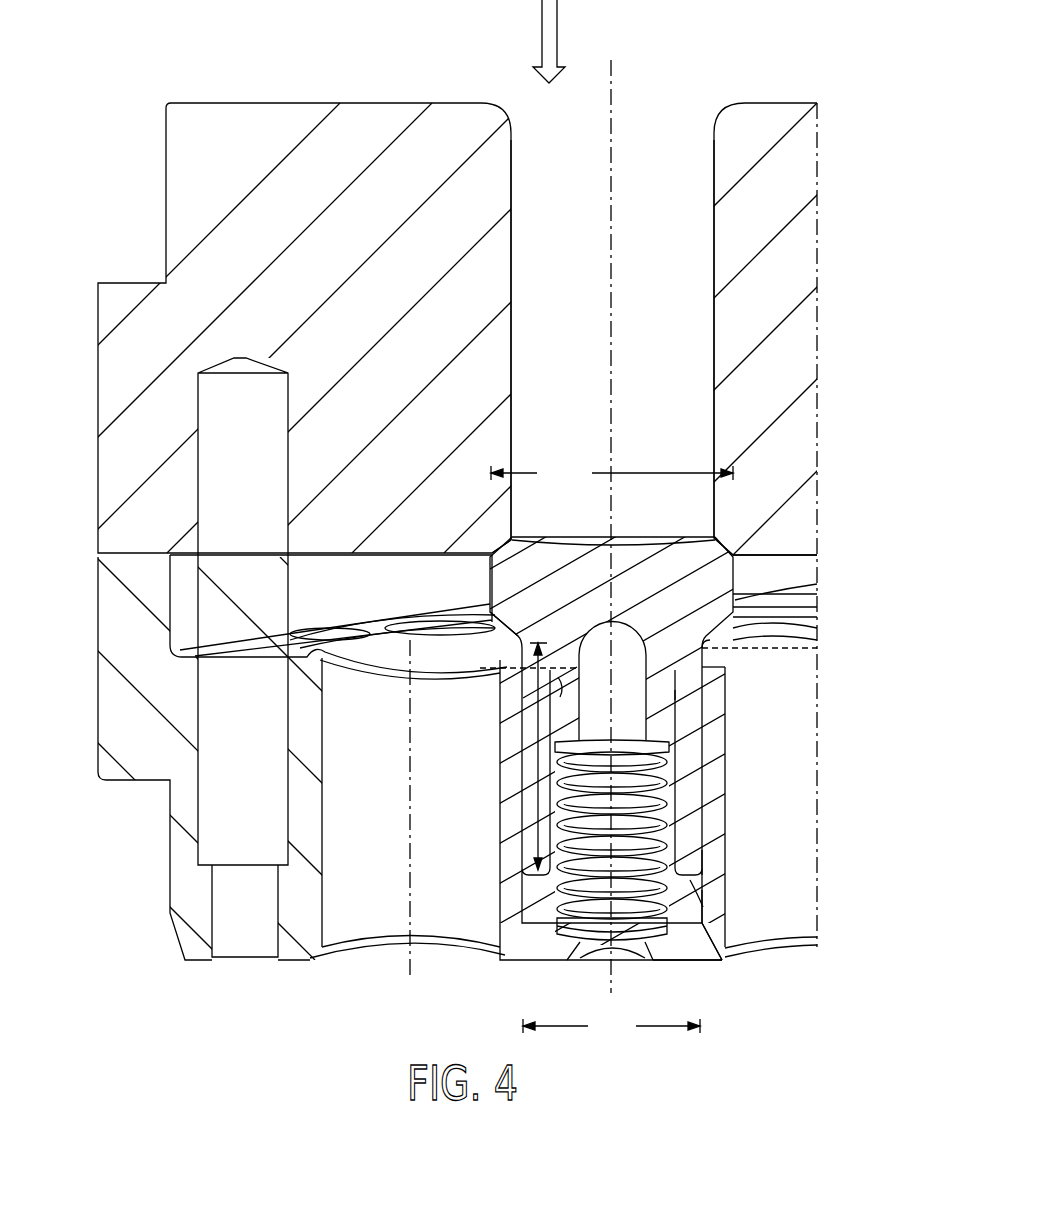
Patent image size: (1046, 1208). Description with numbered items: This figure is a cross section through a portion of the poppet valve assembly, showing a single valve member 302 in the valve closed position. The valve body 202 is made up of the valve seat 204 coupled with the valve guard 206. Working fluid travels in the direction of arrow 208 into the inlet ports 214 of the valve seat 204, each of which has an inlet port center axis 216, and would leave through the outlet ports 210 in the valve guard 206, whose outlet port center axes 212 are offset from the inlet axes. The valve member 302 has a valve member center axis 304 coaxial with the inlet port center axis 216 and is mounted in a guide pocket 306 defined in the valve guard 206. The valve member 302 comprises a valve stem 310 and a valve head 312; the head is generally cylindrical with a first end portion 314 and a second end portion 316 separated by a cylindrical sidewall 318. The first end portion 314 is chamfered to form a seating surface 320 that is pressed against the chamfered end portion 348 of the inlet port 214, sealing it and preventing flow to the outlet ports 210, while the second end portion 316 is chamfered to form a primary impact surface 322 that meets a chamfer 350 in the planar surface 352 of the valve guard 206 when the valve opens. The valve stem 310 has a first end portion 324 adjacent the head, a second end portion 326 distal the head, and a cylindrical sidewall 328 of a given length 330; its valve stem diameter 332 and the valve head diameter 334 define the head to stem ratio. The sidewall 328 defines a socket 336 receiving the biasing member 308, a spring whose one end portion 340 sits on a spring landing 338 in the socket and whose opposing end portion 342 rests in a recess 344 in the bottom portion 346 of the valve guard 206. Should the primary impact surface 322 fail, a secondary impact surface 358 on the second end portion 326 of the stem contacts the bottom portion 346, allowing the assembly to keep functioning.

The valve body 202 is at (523, 531).
The valve seat 204 is at (97, 418).
The valve guard 206 is at (98, 665).
The arrow 208 is at (557, 25).
The outlet ports 210 is at (362, 917).
The outlet port center axes 212 is at (410, 882).
The inlet ports 214 is at (685, 125).
The inlet port center axis 216 is at (611, 210).
The valve member 302 is at (512, 761).
The valve member center axis 304 is at (617, 973).
The guide pocket 306 is at (703, 898).
The biasing member 308 is at (679, 922).
The valve stem 310 is at (690, 776).
The valve head 312 is at (715, 602).
The first end portion 314 is at (742, 563).
The second end portion 316 is at (504, 643).
The cylindrical sidewall 318 is at (490, 590).
The seating surface 320 is at (717, 540).
The primary impact surface 322 is at (455, 632).
The first end portion 324 is at (718, 662).
The second end portion 326 is at (715, 861).
The cylindrical sidewall 328 is at (672, 803).
The length 330 is at (535, 852).
The valve stem diameter 332 is at (611, 1027).
The valve head diameter 334 is at (612, 474).
The socket 336 is at (687, 811).
The spring landing 338 is at (723, 698).
The end portion 340 is at (683, 741).
The opposing end portion 342 is at (550, 943).
The recess 344 is at (577, 943).
The bottom portion 346 is at (720, 955).
The end portion 348 is at (490, 530).
The chamfer 350 is at (505, 682).
The planar surface 352 is at (252, 652).
The secondary impact surface 358 is at (703, 906).